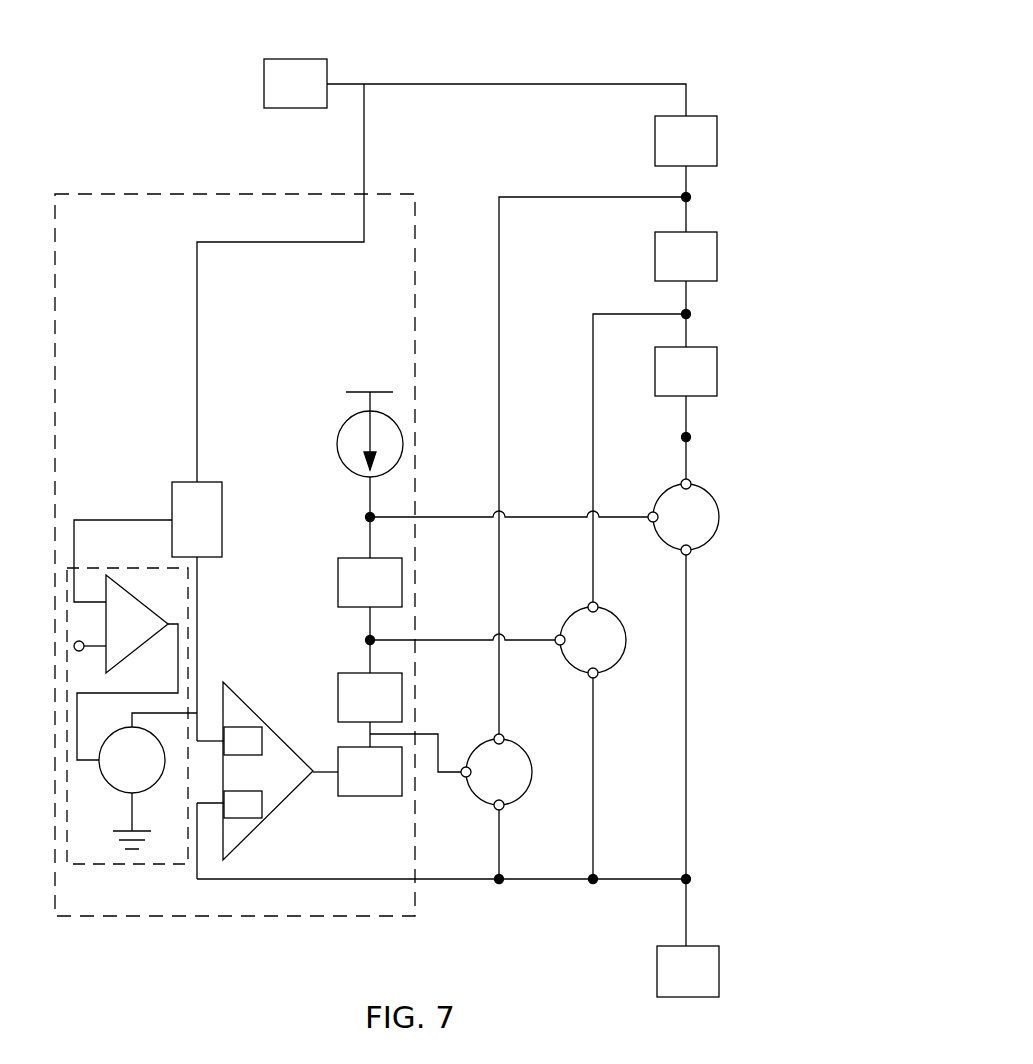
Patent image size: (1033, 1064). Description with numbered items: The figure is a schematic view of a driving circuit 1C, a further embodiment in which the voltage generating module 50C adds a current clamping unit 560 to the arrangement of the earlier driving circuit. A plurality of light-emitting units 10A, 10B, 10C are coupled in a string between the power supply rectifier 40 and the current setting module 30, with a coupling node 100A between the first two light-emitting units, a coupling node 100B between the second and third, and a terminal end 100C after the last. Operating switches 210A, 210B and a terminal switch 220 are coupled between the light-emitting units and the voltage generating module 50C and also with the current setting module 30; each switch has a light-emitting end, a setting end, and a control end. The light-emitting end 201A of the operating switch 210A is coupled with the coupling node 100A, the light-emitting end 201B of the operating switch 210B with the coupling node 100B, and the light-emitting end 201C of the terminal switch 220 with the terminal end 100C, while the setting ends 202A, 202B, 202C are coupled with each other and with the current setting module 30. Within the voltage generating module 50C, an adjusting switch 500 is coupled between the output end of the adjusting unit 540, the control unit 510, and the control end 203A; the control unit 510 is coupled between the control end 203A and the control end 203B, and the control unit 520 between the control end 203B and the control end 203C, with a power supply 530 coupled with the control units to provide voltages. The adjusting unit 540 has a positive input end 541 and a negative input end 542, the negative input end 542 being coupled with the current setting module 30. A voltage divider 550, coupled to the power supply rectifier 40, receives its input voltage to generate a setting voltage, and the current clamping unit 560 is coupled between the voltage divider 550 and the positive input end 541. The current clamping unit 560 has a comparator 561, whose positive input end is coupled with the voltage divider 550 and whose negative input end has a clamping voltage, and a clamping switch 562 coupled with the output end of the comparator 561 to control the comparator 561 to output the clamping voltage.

The driving circuit 1C is at (218, 35).
The power supply rectifier 40 is at (308, 97).
The voltage generating module 50C is at (218, 193).
The light-emitting unit 10A is at (704, 154).
The light-emitting unit 10B is at (704, 269).
The light-emitting unit 10C is at (704, 384).
The coupling node 100A is at (620, 460).
The coupling node 100B is at (667, 453).
The terminal end 100C is at (712, 437).
The terminal switch 220 is at (703, 530).
The light-emitting end 201C is at (692, 481).
The setting end 202C is at (692, 554).
The control end 203C is at (650, 522).
The operating switch 210B is at (616, 653).
The light-emitting end 201B is at (599, 603).
The setting end 202B is at (599, 677).
The control end 203B is at (556, 645).
The operating switch 210A is at (522, 785).
The light-emitting end 201A is at (505, 735).
The setting end 202A is at (505, 809).
The control end 203A is at (462, 777).
The current setting module 30 is at (700, 984).
The power supply 530 is at (347, 420).
The control unit 520 is at (386, 595).
The control unit 510 is at (386, 710).
The adjusting switch 500 is at (386, 784).
The adjusting unit 540 is at (247, 702).
The positive input end 541 is at (259, 753).
The negative input end 542 is at (259, 816).
The voltage divider 550 is at (214, 533).
The current clamping unit 560 is at (88, 866).
The comparator 561 is at (145, 637).
The clamping switch 562 is at (149, 773).